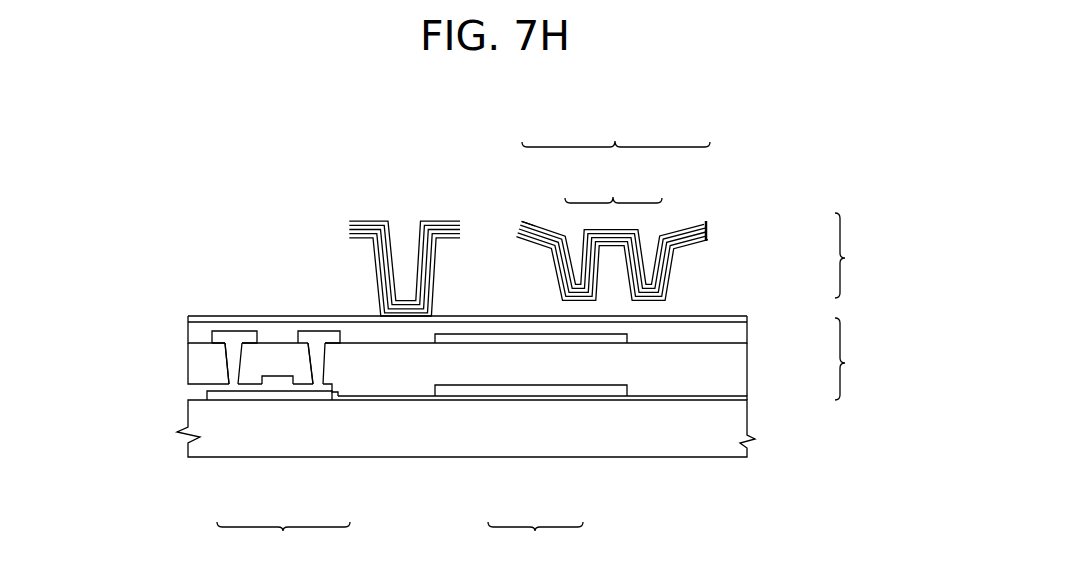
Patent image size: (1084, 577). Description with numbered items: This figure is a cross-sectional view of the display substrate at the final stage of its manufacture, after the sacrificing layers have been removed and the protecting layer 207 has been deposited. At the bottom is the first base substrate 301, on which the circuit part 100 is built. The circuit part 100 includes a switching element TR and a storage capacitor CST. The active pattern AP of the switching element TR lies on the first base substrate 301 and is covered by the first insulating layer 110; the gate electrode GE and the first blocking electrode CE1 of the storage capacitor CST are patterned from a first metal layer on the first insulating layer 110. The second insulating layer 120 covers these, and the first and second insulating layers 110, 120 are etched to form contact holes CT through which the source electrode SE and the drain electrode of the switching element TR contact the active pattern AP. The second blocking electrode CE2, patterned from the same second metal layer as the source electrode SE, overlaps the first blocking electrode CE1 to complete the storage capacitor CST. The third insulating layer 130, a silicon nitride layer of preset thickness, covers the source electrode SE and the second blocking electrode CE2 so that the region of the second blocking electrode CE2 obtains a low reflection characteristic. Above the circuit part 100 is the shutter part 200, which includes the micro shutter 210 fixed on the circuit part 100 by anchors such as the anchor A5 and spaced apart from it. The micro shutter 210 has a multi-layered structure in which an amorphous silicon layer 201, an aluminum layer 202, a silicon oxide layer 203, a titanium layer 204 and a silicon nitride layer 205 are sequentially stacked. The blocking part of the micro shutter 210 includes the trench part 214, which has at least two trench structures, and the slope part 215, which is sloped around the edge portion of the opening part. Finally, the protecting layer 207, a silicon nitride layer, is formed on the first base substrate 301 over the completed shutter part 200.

The protecting layer 207 is at (190, 315).
The third insulating layer 130 is at (747, 333).
The second insulating layer 120 is at (747, 367).
The first insulating layer 110 is at (747, 399).
The first base substrate 301 is at (747, 426).
The circuit part 100 is at (856, 359).
The gate electrode GE is at (268, 382).
The active pattern AP is at (290, 397).
The source electrode SE is at (238, 338).
The contact hole CT is at (225, 360).
The switching element TR is at (283, 542).
The first blocking electrode CE1 is at (507, 392).
The second blocking electrode CE2 is at (560, 338).
The storage capacitor CST is at (535, 542).
The anchor A5 is at (440, 221).
The amorphous silicon layer 201 is at (708, 242).
The aluminum layer 202 is at (708, 237).
The silicon oxide layer 203 is at (708, 232).
The titanium layer 204 is at (708, 227).
The silicon nitride layer 205 is at (708, 223).
The shutter part 200 is at (793, 255).
The micro shutter 210 is at (616, 130).
The trench part 214 is at (613, 186).
The slope part 215 is at (545, 225).